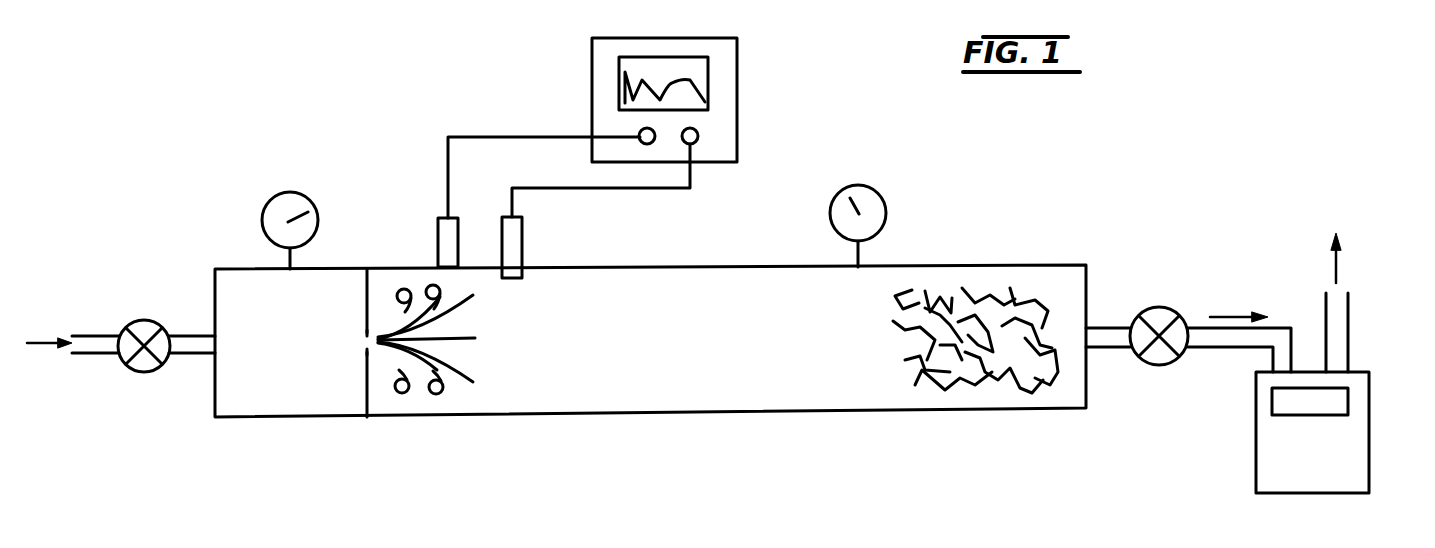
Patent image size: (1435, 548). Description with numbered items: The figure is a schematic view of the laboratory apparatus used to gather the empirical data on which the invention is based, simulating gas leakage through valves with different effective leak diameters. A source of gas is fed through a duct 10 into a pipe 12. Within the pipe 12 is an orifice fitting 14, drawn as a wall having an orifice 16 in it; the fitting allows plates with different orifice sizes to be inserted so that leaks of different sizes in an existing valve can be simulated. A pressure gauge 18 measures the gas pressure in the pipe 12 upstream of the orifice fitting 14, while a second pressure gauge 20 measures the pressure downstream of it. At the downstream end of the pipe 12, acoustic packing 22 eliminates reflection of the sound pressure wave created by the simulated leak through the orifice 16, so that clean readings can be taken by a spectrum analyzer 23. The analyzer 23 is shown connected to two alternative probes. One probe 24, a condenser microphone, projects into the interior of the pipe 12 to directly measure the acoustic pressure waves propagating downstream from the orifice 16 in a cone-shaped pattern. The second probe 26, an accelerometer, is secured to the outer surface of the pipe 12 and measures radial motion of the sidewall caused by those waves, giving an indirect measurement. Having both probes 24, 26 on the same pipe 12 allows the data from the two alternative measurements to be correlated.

The duct 10 is at (90, 336).
The pipe 12 is at (565, 413).
The orifice fitting 14 is at (363, 378).
The orifice 16 is at (363, 338).
The pressure gauge 18 is at (313, 196).
The pressure gauge 20 is at (880, 196).
The acoustic packing 22 is at (960, 310).
The spectrum analyzer 23 is at (737, 90).
The probe 24 is at (522, 245).
The probe 26 is at (437, 243).